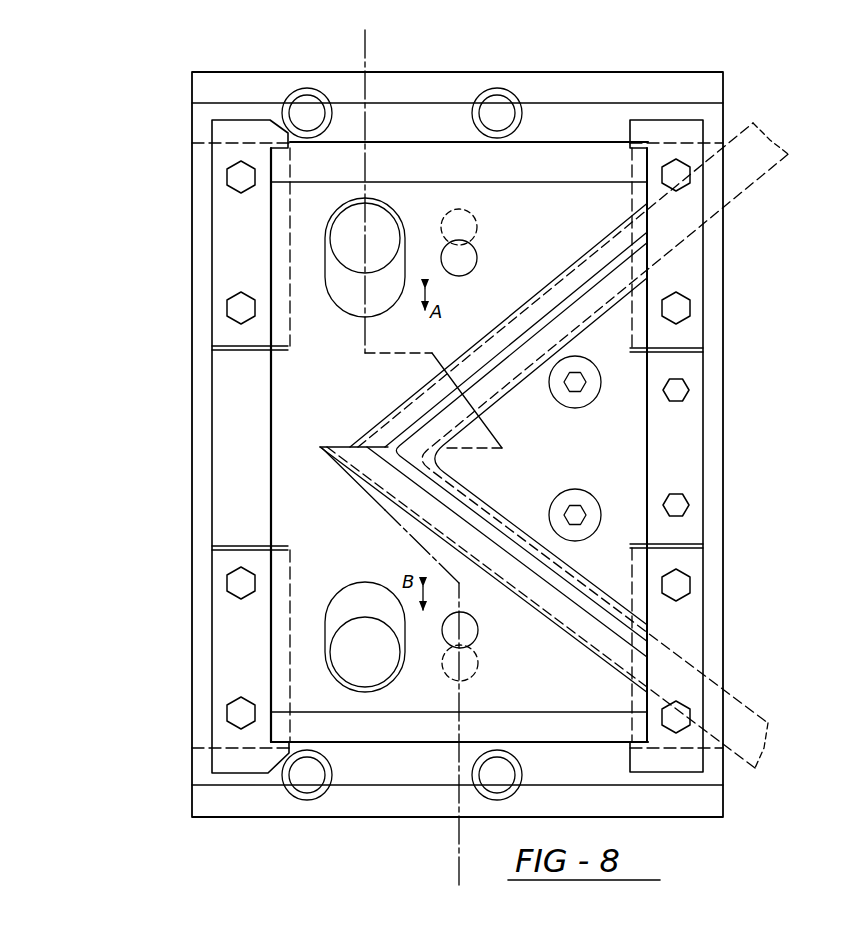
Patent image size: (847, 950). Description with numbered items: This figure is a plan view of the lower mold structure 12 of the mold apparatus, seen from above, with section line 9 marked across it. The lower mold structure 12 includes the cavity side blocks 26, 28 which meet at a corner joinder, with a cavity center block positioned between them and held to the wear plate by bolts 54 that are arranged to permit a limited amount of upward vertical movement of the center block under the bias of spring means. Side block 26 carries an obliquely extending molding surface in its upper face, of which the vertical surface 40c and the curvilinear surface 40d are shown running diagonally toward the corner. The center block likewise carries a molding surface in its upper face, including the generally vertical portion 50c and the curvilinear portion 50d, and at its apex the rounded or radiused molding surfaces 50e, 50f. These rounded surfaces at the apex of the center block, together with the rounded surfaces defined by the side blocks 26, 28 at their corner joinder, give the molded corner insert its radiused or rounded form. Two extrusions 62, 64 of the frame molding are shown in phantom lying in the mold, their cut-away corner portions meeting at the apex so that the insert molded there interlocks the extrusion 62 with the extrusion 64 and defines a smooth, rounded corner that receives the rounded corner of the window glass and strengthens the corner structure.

The section line 9- 9 is at (365, 30).
The lower mold structure 12 is at (170, 168).
The cavity side block 26 is at (420, 676).
The cavity side block 28 is at (539, 236).
The vertical surface 40c is at (568, 583).
The curvilinear surface 40d is at (582, 617).
The generally vertical portion 50c is at (607, 625).
The curvilinear portion 50d is at (557, 573).
The rounded molding surface 50e is at (443, 463).
The rounded molding surface 50f is at (405, 440).
The bolts 54 is at (578, 392).
The extrusion 62 is at (775, 136).
The extrusion 64 is at (766, 747).